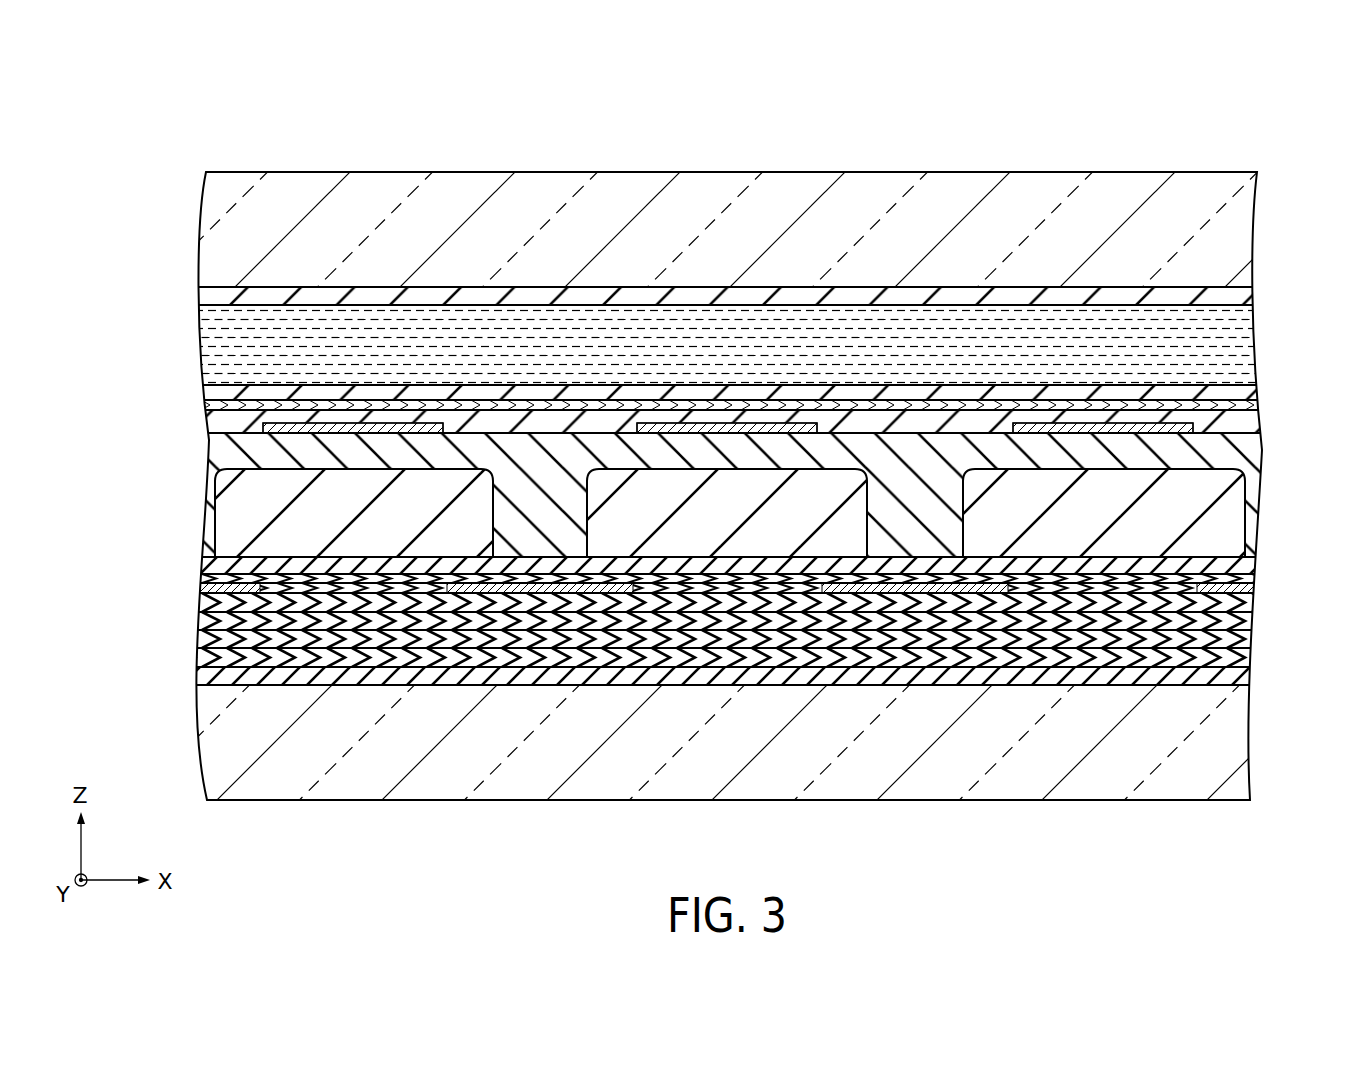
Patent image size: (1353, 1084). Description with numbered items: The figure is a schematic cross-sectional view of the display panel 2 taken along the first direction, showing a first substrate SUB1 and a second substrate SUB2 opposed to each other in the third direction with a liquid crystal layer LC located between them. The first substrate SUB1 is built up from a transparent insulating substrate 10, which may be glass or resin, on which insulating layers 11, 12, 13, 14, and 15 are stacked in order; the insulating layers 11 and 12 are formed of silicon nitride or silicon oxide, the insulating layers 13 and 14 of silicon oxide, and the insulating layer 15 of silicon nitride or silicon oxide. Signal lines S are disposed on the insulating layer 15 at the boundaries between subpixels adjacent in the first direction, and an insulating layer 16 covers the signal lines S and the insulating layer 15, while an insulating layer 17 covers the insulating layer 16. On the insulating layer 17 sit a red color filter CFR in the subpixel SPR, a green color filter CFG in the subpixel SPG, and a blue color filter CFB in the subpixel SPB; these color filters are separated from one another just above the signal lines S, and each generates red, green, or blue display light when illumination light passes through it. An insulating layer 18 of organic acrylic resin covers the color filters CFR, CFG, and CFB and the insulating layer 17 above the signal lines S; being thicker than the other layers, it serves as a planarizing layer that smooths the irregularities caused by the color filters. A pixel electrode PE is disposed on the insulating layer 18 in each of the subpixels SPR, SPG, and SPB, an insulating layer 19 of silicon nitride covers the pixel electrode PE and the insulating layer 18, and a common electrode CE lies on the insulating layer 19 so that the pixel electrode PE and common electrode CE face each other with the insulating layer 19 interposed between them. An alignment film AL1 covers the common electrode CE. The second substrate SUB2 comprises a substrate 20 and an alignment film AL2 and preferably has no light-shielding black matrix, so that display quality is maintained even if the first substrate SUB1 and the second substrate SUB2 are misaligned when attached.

The display panel 2 is at (1172, 137).
The substrate 10 is at (1245, 745).
The insulating layer 11 is at (1252, 676).
The insulating layer 12 is at (1252, 657).
The insulating layer 13 is at (1252, 640).
The insulating layer 14 is at (1252, 620).
The insulating layer 15 is at (1252, 602).
The insulating layer 16 is at (1252, 578).
The insulating layer 17 is at (1252, 565).
The insulating layer 18 is at (1252, 458).
The insulating layer 19 is at (1252, 425).
The substrate 20 is at (1245, 232).
The alignment film AL1 is at (1252, 396).
The alignment film AL2 is at (1252, 298).
The liquid crystal layer LC is at (1252, 340).
The common electrode CE is at (212, 405).
The pixel electrode PE is at (290, 426).
The red color filter CFR is at (226, 525).
The green color filter CFG is at (693, 540).
The blue color filter CFB is at (1095, 540).
The signal line S is at (215, 590).
The first substrate SUB1 is at (182, 681).
The second substrate SUB2 is at (186, 276).
The subpixel SPR is at (352, 376).
The subpixel SPG is at (738, 376).
The subpixel SPB is at (1112, 376).